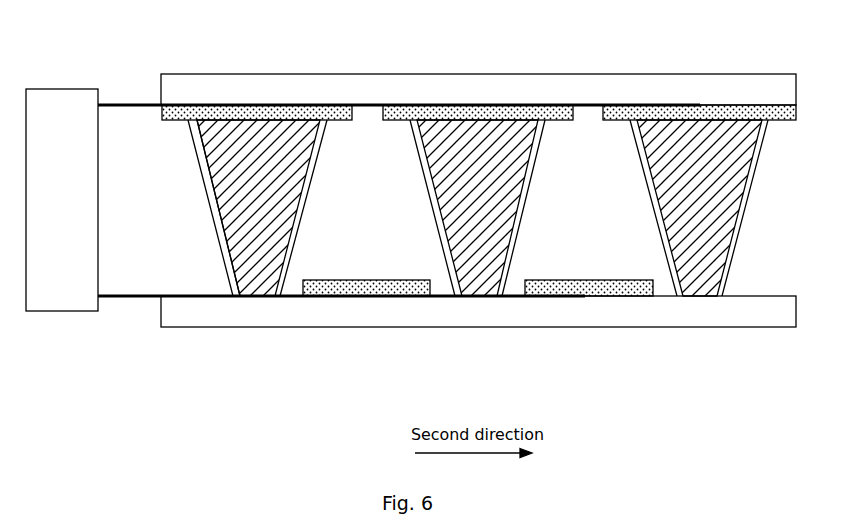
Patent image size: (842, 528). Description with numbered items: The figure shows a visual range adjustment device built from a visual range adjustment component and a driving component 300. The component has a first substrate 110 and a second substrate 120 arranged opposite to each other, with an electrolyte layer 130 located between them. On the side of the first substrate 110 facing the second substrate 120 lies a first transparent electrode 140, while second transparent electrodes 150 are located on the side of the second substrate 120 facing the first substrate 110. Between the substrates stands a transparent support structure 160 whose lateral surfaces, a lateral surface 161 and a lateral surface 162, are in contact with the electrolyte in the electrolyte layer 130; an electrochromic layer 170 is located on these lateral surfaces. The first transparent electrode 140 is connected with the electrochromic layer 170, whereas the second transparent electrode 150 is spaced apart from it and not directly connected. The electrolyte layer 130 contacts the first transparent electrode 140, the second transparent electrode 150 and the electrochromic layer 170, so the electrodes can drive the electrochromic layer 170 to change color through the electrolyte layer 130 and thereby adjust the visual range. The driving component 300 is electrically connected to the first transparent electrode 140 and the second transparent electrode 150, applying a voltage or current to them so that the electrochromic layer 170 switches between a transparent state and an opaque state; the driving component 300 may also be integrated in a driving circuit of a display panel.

The first substrate 110 is at (303, 87).
The second substrate 120 is at (383, 312).
The electrolyte layer 130 is at (383, 170).
The first transparent electrode 140 is at (648, 113).
The second transparent electrode 150 is at (564, 290).
The transparent support structure 160 is at (478, 206).
The lateral surface 161 is at (226, 247).
The lateral surface 162 is at (285, 242).
The electrochromic layer 170 is at (533, 148).
The driving component 300 is at (363, 200).